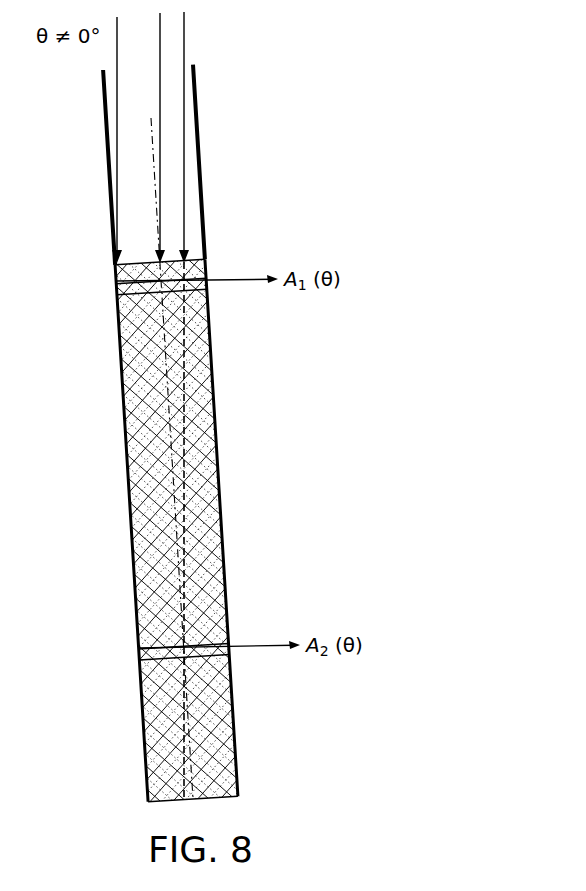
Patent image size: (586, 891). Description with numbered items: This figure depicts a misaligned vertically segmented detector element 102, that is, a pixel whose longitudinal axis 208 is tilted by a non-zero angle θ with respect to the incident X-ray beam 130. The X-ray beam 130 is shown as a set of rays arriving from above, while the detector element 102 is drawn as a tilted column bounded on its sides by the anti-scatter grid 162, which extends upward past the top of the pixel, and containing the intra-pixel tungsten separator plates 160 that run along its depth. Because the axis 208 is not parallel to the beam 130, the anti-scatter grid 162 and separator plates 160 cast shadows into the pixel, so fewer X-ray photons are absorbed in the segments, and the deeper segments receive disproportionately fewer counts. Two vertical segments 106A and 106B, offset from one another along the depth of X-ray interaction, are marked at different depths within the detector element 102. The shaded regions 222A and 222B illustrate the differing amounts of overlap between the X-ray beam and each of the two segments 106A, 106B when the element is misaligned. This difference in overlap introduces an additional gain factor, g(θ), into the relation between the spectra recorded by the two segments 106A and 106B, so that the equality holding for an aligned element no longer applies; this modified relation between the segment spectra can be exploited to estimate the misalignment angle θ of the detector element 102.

The detector element 102 is at (317, 743).
The first vertical segment 106A is at (217, 290).
The second vertical segment 106B is at (240, 653).
The X-ray beam 130 is at (184, 27).
The intra-pixel tungsten separator plates 160 is at (222, 505).
The anti-scatter grid 162 is at (202, 140).
The longitudinal axis 208 is at (157, 472).
The first shaded region 222A is at (117, 287).
The second shaded region 222B is at (138, 652).